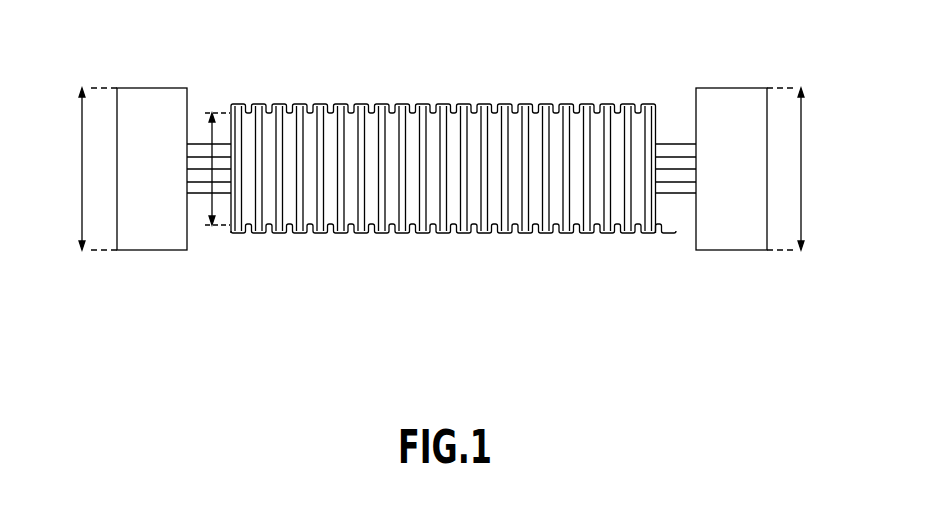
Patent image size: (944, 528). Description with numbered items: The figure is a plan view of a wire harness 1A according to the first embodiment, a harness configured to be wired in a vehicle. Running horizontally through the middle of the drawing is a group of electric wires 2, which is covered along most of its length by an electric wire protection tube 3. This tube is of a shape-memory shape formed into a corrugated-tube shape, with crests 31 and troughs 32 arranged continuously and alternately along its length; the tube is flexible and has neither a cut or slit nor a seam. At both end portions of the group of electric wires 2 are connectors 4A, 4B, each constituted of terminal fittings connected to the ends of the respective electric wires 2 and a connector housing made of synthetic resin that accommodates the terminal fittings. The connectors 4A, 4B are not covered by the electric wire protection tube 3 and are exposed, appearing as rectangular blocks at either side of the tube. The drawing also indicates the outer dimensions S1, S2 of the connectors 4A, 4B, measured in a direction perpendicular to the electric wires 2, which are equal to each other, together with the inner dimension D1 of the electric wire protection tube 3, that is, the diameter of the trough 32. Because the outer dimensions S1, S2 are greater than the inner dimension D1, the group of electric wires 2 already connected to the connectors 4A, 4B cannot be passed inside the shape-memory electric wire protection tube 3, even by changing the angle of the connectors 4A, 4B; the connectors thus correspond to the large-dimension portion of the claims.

The wire harness 1A is at (750, 30).
The electric wires 2 is at (225, 187).
The electric wire protection tube 3 is at (453, 170).
The crests 31 is at (279, 104).
The troughs 32 is at (285, 233).
The connector 4A is at (151, 250).
The connector 4B is at (730, 250).
The outer dimension S1 is at (81, 166).
The outer dimension S2 is at (802, 168).
The inner dimension D1 is at (211, 208).